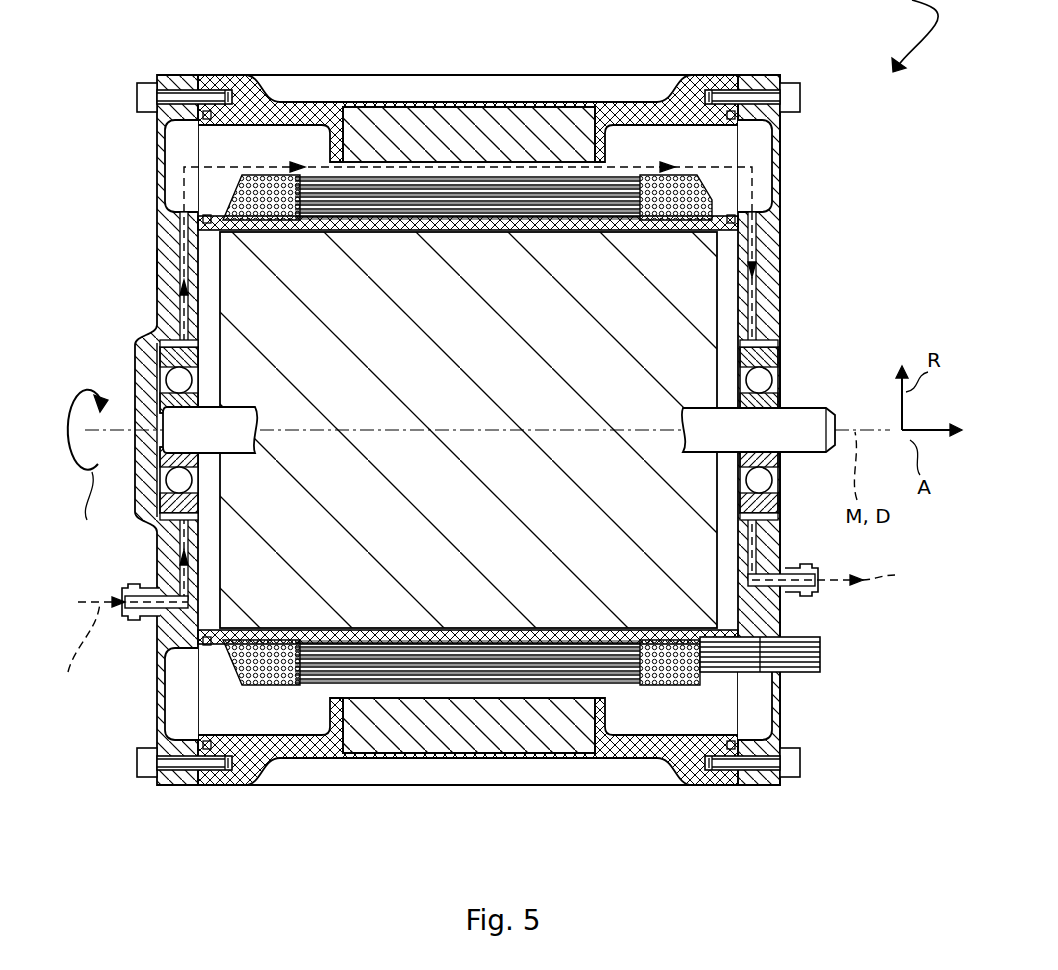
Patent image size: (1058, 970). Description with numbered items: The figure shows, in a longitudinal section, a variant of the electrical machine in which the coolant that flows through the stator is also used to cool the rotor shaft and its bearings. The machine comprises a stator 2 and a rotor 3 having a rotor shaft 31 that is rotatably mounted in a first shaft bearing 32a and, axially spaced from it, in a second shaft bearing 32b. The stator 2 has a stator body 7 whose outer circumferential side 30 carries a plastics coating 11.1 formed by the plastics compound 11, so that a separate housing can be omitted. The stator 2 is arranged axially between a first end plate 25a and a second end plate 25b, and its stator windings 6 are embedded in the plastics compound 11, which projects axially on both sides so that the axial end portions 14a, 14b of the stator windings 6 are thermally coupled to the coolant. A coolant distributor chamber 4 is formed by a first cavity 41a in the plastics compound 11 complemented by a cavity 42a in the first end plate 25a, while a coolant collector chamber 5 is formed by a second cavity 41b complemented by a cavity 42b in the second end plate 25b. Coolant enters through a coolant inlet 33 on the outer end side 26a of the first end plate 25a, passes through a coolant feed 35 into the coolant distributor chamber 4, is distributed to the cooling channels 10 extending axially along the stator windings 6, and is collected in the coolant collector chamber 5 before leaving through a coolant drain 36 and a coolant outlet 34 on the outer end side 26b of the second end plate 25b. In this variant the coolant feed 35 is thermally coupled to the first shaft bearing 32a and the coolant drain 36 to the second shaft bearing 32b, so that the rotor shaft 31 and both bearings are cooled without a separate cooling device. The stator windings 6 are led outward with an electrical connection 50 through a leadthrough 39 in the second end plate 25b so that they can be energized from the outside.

The stator 2 is at (552, 95).
The rotor 3 is at (448, 390).
The coolant distributor chamber 4 is at (223, 157).
The coolant collector chamber 5 is at (705, 157).
The stator windings 6 is at (610, 232).
The stator body 7 is at (458, 95).
The cooling channels 10 is at (362, 150).
The plastics compound 11 is at (632, 95).
The plastics coating 11.1 is at (510, 100).
The first axial end portion 14a is at (215, 198).
The second axial end portion 14b is at (735, 195).
The first end plate 25a is at (150, 268).
The second end plate 25b is at (790, 266).
The outer end side of first end plate 26a is at (157, 305).
The outer end side of second end plate 26b is at (785, 305).
The outer circumferential side 30 is at (434, 100).
The rotor shaft 31 is at (805, 440).
The first shaft bearing 32a is at (170, 360).
The second shaft bearing 32b is at (780, 360).
The coolant inlet 33 is at (138, 618).
The coolant outlet 34 is at (808, 594).
The coolant feed 35 is at (190, 225).
The coolant drain 36 is at (755, 232).
The leadthrough 39 is at (778, 672).
The first cavity 41a is at (265, 140).
The second cavity 41b is at (680, 140).
The cavity in first end plate 42a is at (180, 152).
The cavity in second end plate 42b is at (765, 155).
The electrical connection 50 is at (822, 655).